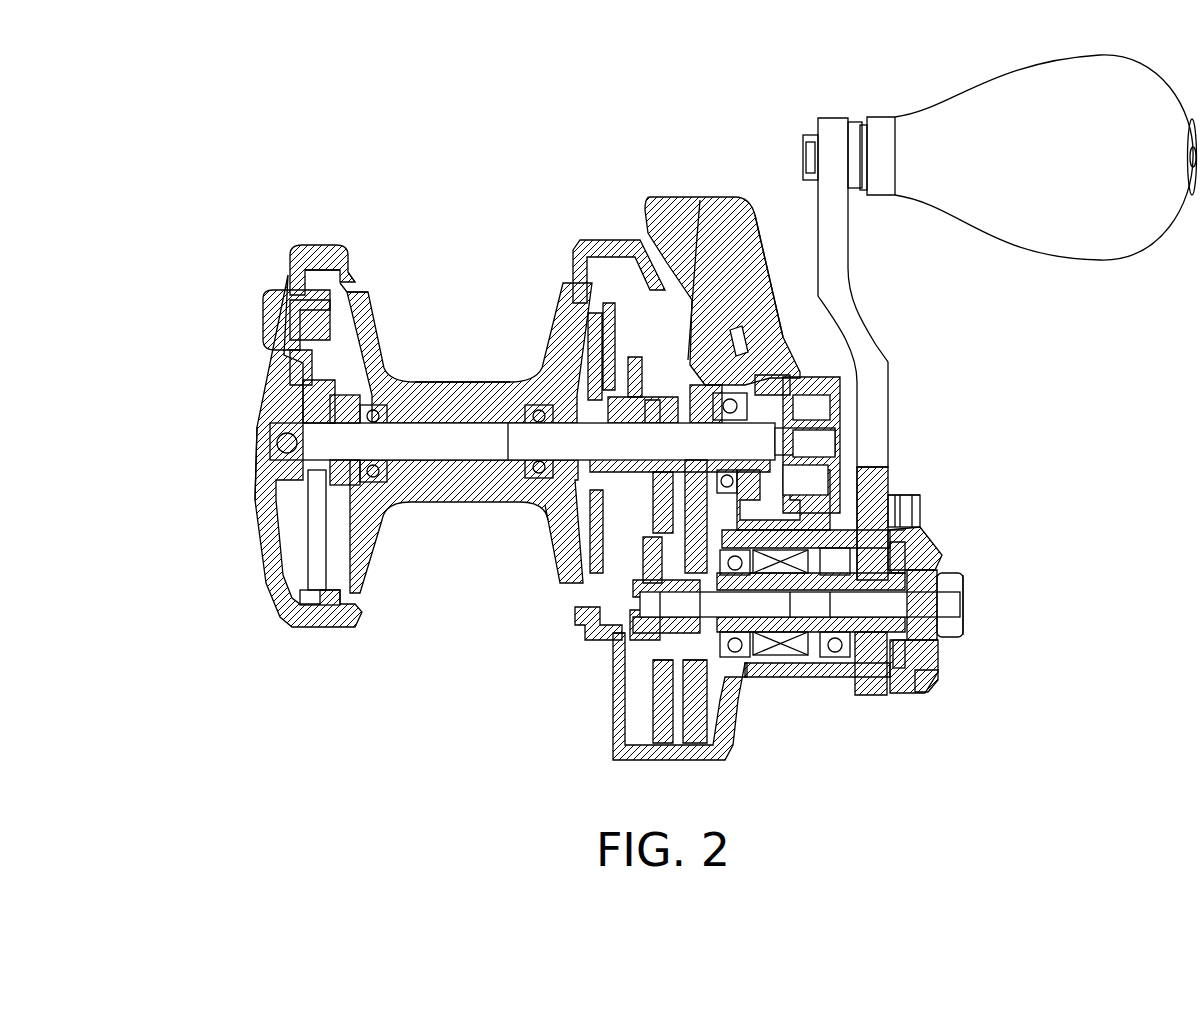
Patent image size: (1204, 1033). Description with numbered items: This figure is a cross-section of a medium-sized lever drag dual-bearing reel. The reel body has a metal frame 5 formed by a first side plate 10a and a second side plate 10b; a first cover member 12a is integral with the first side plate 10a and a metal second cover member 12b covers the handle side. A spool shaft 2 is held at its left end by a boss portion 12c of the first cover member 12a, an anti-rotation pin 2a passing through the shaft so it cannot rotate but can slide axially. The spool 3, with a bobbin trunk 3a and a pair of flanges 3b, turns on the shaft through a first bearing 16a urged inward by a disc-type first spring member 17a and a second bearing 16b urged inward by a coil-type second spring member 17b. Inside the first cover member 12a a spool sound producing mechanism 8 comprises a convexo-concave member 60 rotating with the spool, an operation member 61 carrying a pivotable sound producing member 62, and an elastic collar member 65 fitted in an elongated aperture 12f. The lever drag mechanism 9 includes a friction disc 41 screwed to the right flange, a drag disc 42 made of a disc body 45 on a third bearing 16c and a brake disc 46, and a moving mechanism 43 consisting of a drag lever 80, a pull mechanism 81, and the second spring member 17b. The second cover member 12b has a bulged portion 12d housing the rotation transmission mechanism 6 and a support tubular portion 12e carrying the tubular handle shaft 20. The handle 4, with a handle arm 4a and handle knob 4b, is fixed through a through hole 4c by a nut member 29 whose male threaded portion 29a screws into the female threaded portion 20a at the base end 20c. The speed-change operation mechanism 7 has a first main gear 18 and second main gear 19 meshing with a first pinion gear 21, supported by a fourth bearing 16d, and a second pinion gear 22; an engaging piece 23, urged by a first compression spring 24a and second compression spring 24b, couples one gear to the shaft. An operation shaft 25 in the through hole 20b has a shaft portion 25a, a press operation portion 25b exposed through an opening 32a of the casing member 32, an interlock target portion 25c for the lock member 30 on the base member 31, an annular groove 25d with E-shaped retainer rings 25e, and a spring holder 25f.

The spool shaft 2 is at (481, 440).
The anti-rotation pin 2a is at (290, 447).
The spool 3 is at (455, 378).
The bobbin trunk 3a is at (431, 380).
The flanges 3b is at (356, 306).
The handle 4 is at (878, 332).
The handle arm 4a is at (880, 378).
The handle knob 4b is at (957, 130).
The through hole 4c is at (935, 688).
The frame 5 is at (352, 225).
The rotation transmission mechanism 6 is at (672, 745).
The speed-change operation mechanism 7 is at (1073, 580).
The spool sound producing mechanism 8 is at (266, 276).
The lever drag mechanism 9 is at (773, 218).
The first side plate 10a is at (352, 266).
The second side plate 10b is at (590, 240).
The first cover member 12a is at (330, 245).
The second cover member 12b is at (655, 390).
The boss portion 12c is at (255, 475).
The bulged portion 12d is at (734, 690).
The support tubular portion 12e is at (784, 677).
The elongated aperture 12f is at (263, 296).
The first bearing 16a is at (335, 538).
The second bearing 16b is at (500, 504).
The third bearing 16c is at (578, 410).
The fourth bearing 16d is at (747, 407).
The first spring member 17a is at (320, 500).
The second spring member 17b is at (530, 527).
The first main gear 18 is at (697, 745).
The second main gear 19 is at (660, 728).
The handle shaft 20 is at (781, 677).
The female threaded portion 20a is at (895, 545).
The through hole 20b is at (870, 467).
The base end 20c is at (893, 460).
The first pinion gear 21 is at (740, 345).
The second pinion gear 22 is at (752, 300).
The engaging piece 23 is at (620, 665).
The first compression spring 24a is at (645, 625).
The second compression spring 24b is at (665, 655).
The operation shaft 25 is at (1015, 568).
The shaft portion 25a is at (878, 695).
The press operation portion 25b is at (955, 623).
The interlock target portion 25c is at (962, 578).
The annular groove 25d is at (828, 690).
The E-shaped retainer rings 25e is at (843, 690).
The spring holder 25f is at (790, 700).
The nut member 29 is at (905, 700).
The male threaded portion 29a is at (940, 660).
The lock member 30 is at (928, 502).
The base member 31 is at (928, 540).
The casing member 32 is at (957, 527).
The opening 32a is at (950, 640).
The friction disc 41 is at (573, 602).
The drag disc 42 is at (611, 325).
The moving mechanism 43 is at (637, 627).
The disc body 45 is at (665, 397).
The brake disc 46 is at (572, 588).
The convexo-concave member 60 is at (312, 392).
The operation member 61 is at (268, 318).
The sound producing member 62 is at (285, 345).
The collar member 65 is at (295, 262).
The drag lever 80 is at (723, 192).
The pull mechanism 81 is at (692, 407).